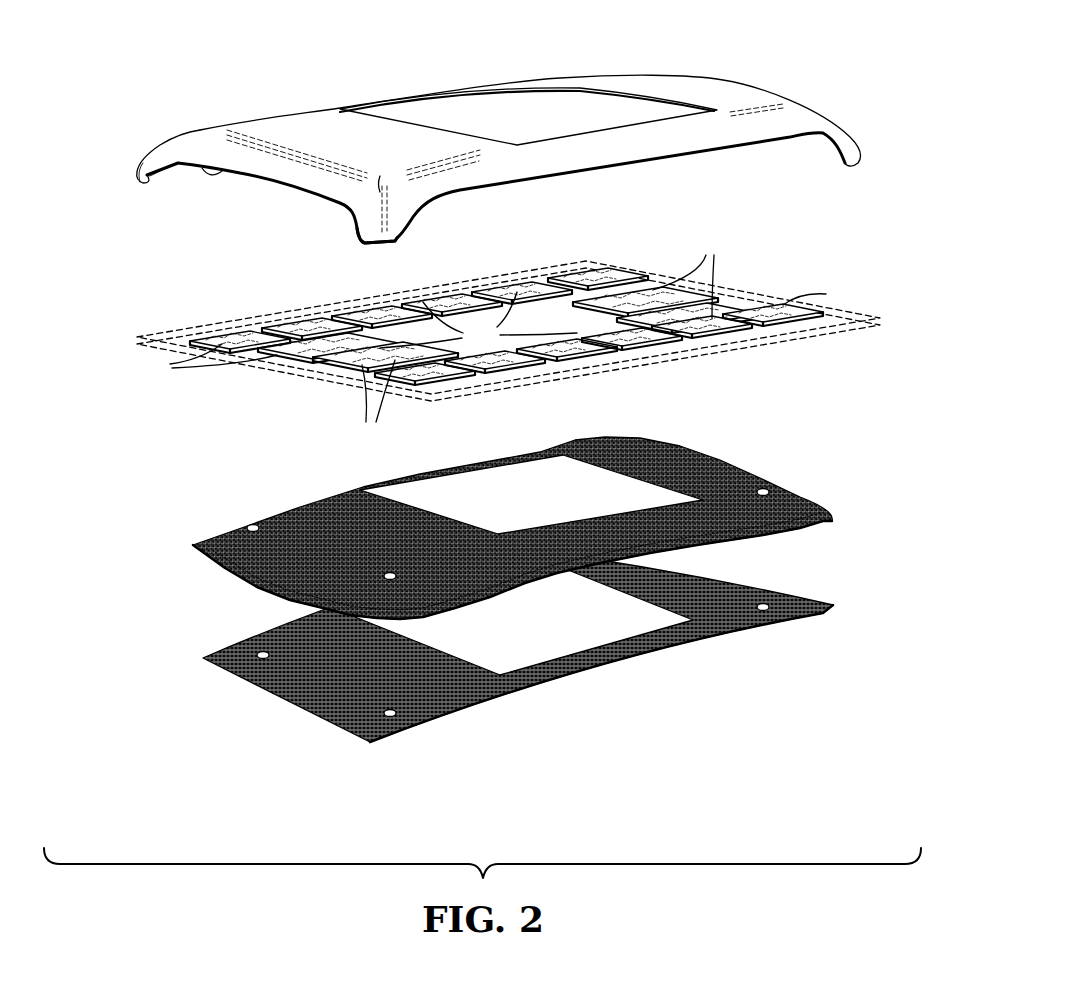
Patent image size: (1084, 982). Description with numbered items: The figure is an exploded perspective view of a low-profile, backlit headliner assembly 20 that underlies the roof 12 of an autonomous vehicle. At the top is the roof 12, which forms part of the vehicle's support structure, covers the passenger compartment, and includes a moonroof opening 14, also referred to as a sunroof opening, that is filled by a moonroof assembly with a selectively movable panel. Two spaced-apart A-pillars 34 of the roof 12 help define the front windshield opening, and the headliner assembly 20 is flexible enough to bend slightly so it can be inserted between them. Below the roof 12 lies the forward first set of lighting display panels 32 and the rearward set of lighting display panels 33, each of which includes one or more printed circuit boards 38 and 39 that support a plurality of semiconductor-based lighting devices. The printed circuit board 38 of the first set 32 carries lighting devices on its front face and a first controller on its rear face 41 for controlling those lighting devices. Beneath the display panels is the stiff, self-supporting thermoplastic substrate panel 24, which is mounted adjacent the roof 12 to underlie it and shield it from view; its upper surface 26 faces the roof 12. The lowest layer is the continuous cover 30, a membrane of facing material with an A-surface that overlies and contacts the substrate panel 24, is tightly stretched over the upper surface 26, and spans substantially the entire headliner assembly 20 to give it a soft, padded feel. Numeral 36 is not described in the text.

The roof 12 is at (724, 78).
The moonroof opening 14 is at (662, 100).
The headliner assembly 20 is at (906, 398).
The substrate panel 24 is at (796, 536).
The upper surface 26 is at (764, 470).
The cover 30 is at (836, 615).
The first set of lighting display panels 32 is at (176, 323).
The rearward set of lighting display panels 33 is at (784, 282).
The A-pillars 34 is at (137, 165).
The roof feature 36 is at (207, 168).
The printed circuit board 38 is at (690, 278).
The printed circuit board 39 is at (232, 318).
The rear face 41 is at (499, 339).